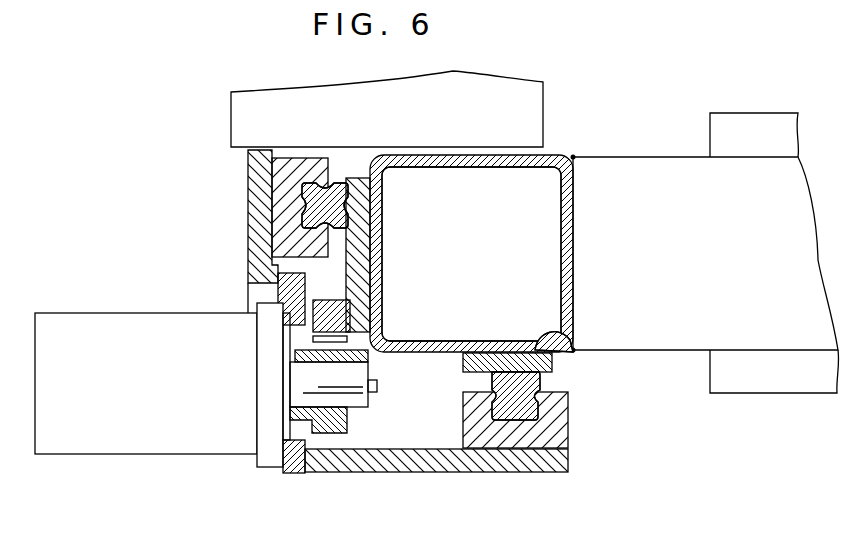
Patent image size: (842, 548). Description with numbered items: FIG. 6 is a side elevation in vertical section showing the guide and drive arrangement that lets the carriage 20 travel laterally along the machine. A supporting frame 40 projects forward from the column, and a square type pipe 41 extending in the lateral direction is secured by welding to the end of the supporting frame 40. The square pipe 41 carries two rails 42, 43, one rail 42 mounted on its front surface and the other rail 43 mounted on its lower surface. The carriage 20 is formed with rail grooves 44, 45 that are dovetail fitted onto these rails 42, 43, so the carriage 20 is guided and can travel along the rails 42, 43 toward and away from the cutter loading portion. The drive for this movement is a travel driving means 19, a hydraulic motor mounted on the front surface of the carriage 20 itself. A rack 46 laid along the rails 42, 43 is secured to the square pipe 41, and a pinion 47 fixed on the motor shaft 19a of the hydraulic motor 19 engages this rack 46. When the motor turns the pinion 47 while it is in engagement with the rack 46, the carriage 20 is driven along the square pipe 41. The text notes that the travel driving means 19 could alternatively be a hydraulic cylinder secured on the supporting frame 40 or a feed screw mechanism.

The travel driving means 19 is at (155, 428).
The motor shaft 19a is at (358, 400).
The carriage 20 is at (393, 460).
The supporting frame 40 is at (647, 187).
The square type pipe 41 is at (500, 157).
The rail 42 is at (338, 188).
The rail 43 is at (537, 345).
The rail groove 44 is at (300, 193).
The rail groove 45 is at (525, 413).
The rack 46 is at (471, 254).
The pinion 47 is at (330, 430).